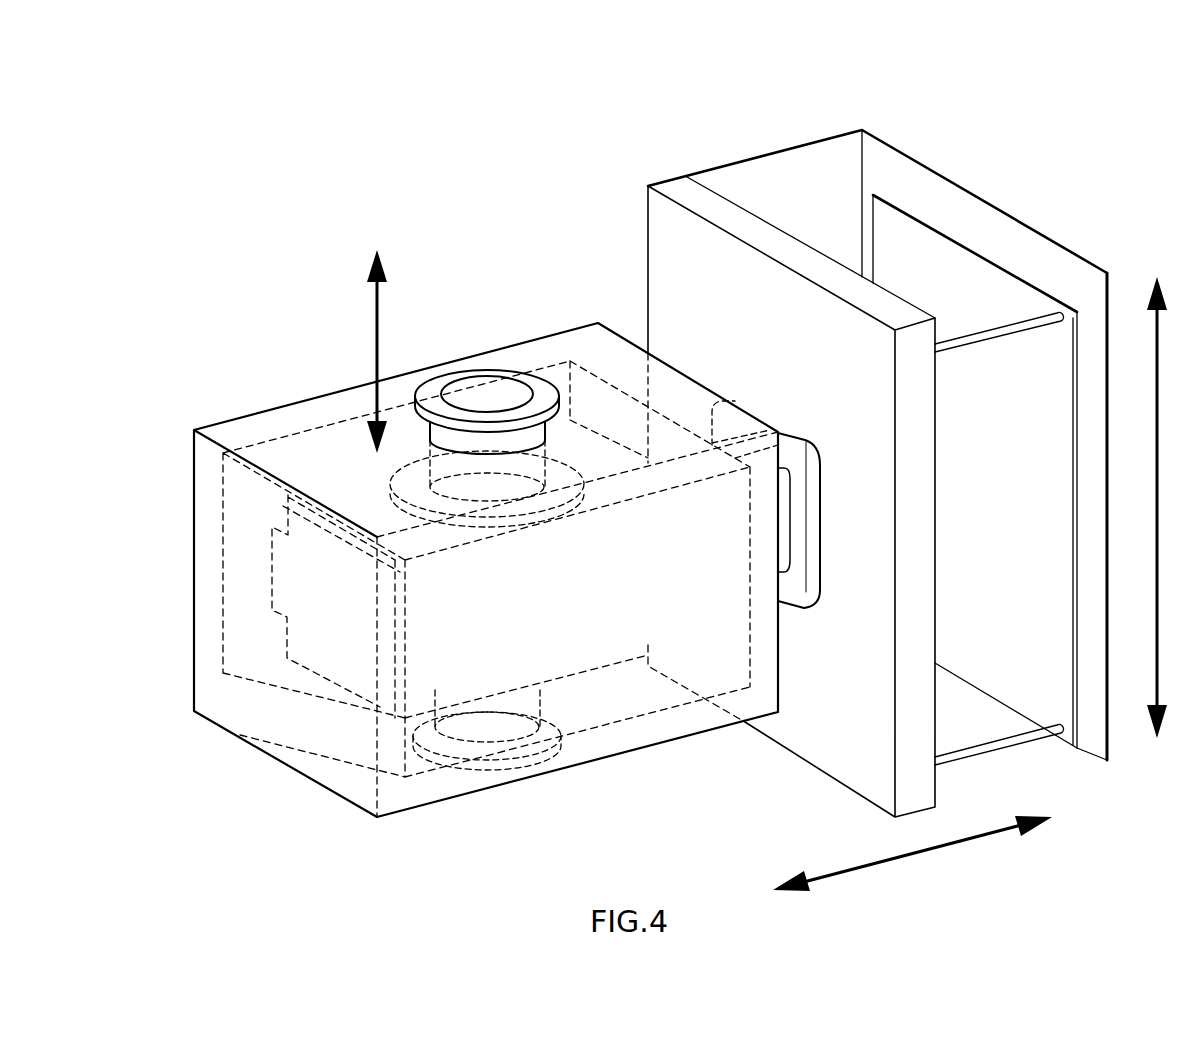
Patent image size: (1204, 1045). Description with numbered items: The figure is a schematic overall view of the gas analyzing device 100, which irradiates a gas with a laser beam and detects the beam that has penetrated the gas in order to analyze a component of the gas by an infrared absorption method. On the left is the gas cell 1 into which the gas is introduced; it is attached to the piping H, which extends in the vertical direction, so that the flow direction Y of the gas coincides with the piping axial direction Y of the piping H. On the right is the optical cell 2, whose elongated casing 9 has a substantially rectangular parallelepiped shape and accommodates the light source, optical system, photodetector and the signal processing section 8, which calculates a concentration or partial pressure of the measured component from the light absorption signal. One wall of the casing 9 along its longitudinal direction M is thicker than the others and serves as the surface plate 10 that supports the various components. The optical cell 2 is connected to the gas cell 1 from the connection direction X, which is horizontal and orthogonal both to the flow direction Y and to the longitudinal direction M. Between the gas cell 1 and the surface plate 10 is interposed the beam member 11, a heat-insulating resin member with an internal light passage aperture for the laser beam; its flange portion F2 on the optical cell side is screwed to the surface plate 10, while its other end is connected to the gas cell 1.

The gas analyzing device 100 is at (278, 114).
The gas cell 1 is at (330, 466).
The optical cell 2 is at (877, 444).
The signal processing section 8 is at (1000, 682).
The casing 9 is at (1057, 238).
The surface plate 10 is at (830, 737).
The beam member 11 is at (738, 445).
The flange portion F2 is at (792, 462).
The piping H is at (476, 377).
The connection direction X is at (912, 853).
The flow direction Y is at (367, 351).
The longitudinal direction M is at (1167, 507).